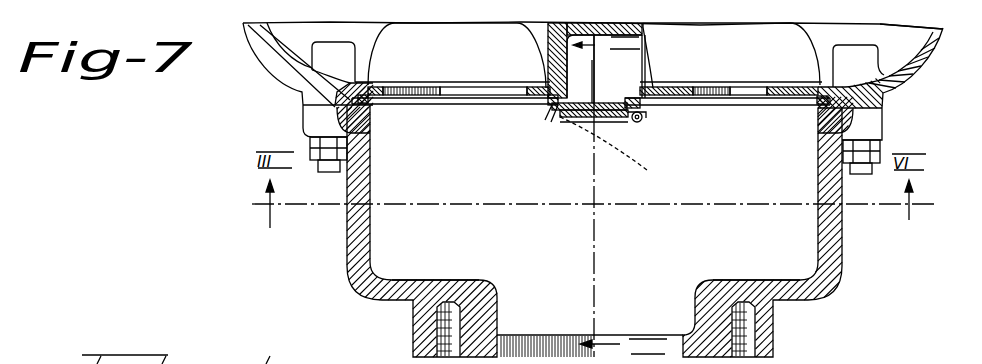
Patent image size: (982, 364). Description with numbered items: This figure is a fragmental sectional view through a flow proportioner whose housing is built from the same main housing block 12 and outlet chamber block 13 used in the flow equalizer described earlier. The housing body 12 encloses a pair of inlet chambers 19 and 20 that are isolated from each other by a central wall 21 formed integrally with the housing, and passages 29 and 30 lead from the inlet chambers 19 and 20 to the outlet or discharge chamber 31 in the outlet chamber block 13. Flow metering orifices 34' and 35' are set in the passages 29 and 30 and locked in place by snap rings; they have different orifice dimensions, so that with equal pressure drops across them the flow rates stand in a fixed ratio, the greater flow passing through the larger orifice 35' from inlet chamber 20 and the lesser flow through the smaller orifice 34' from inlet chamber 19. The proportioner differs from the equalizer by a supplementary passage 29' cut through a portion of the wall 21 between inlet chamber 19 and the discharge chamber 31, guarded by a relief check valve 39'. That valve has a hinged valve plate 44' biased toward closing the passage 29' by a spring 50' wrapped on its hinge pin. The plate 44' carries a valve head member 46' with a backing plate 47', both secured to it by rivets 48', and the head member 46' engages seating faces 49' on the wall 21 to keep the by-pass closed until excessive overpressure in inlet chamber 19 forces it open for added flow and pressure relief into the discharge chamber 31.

The main housing block 12 is at (910, 65).
The outlet chamber block 13 is at (832, 272).
The inlet chamber 19 is at (895, 40).
The inlet chamber 20 is at (290, 40).
The central wall 21 is at (548, 67).
The passage 29 is at (731, 55).
The supplementary passage 29' is at (653, 66).
The passage 30 is at (452, 61).
The outlet or discharge chamber 31 is at (710, 181).
The flow metering orifice 34' is at (727, 110).
The flow metering orifice 35' is at (452, 109).
The relief check valve 39' is at (603, 153).
The valve plate 44' is at (587, 138).
The valve head member 46' is at (546, 127).
The backing plate 47' is at (585, 69).
The rivets 48' is at (589, 88).
The seating faces 49' is at (455, 113).
The spring 50' is at (626, 138).